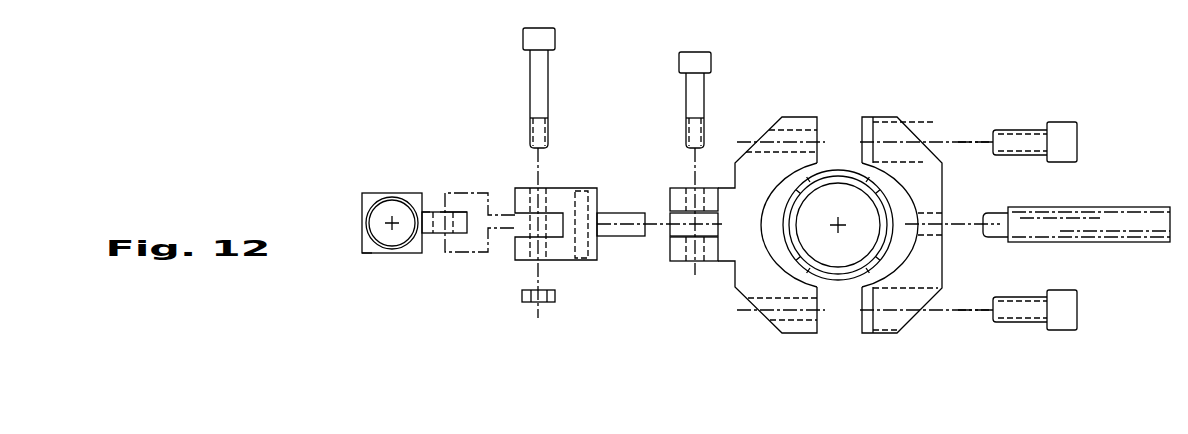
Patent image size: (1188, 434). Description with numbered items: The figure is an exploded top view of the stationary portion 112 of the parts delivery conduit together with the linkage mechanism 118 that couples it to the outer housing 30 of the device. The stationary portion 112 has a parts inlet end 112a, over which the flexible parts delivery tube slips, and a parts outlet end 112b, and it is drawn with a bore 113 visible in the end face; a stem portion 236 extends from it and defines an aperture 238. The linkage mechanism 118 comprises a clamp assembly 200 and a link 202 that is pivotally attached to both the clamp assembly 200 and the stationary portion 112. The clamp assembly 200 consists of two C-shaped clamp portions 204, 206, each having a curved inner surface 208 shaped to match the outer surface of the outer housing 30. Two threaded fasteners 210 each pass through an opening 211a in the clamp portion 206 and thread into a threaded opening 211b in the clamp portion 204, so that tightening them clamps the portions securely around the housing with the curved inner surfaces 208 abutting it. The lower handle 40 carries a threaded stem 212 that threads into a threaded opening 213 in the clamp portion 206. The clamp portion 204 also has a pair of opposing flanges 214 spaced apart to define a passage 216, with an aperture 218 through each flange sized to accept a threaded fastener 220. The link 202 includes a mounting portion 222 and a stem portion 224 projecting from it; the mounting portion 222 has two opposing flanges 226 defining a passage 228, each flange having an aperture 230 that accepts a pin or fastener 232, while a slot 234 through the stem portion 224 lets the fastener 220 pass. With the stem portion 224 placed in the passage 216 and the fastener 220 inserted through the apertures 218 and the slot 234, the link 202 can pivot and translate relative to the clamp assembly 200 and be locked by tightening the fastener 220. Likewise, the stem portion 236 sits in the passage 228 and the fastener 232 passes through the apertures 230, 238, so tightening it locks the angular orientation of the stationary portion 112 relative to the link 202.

The outer housing 30 is at (890, 255).
The lower handle 40 is at (1076, 242).
The stationary portion 112 is at (386, 222).
The parts inlet end 112a is at (431, 211).
The parts outlet end 112b is at (403, 258).
The bore 113 is at (387, 250).
The linkage mechanism 118 is at (515, 330).
The clamp assembly 200 is at (854, 213).
The link 202 is at (597, 219).
The clamp portion 204 is at (788, 204).
The clamp portion 206 is at (930, 213).
The curved inner surface 208 is at (905, 202).
The threaded fastener 210 is at (1062, 122).
The opening 211a is at (938, 150).
The threaded opening 211b is at (780, 125).
The threaded stem 212 is at (1000, 240).
The threaded opening 213 is at (937, 236).
The flange 214 is at (673, 233).
The passage 216 is at (678, 222).
The aperture 218 is at (700, 208).
The threaded fastener 220 is at (686, 88).
The mounting portion 222 is at (535, 217).
The stem portion 224 is at (620, 236).
The flange 226 is at (515, 200).
The passage 228 is at (466, 218).
The aperture 230 is at (548, 303).
The pin or fastener 232 is at (530, 72).
The slot 234 is at (583, 259).
The stem portion 236 is at (447, 212).
The aperture 238 is at (440, 238).